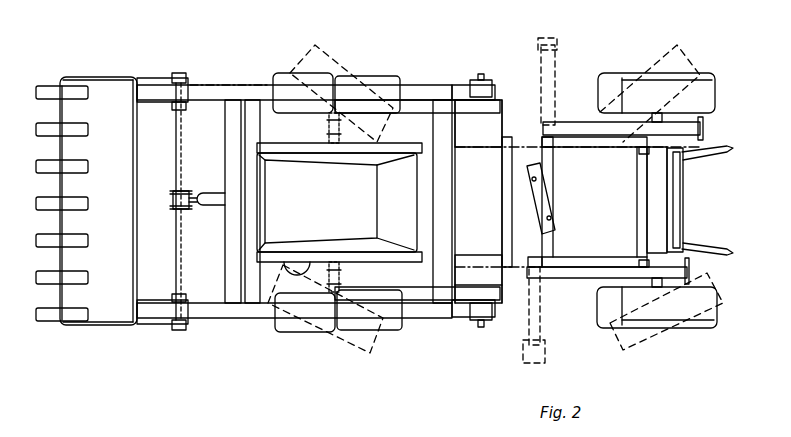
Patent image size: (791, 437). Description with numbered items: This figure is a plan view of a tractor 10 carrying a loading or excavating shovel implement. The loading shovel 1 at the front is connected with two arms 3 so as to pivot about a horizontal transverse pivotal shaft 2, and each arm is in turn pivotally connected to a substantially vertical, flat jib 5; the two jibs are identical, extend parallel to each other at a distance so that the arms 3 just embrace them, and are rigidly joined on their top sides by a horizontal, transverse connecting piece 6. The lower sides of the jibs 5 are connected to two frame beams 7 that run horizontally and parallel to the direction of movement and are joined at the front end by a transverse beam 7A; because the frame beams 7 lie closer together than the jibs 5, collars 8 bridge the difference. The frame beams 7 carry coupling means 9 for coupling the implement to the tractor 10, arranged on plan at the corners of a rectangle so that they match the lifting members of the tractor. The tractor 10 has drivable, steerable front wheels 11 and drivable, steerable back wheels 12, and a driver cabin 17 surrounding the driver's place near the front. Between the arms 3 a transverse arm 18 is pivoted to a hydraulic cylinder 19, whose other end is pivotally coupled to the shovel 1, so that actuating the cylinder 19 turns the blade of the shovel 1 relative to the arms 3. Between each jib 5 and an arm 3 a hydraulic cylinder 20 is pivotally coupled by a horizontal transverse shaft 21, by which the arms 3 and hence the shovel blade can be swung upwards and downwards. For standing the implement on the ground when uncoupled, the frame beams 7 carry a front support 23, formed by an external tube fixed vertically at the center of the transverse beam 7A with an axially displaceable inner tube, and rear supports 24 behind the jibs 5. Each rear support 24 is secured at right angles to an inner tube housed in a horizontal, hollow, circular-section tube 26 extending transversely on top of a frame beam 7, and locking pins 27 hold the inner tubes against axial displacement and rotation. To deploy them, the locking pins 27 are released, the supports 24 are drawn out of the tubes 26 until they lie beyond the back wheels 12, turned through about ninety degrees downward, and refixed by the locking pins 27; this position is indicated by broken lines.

The loading shovel 1 is at (106, 88).
The horizontal transverse pivotal shaft 2 is at (178, 73).
The arms 3 is at (246, 88).
The jib 5 is at (497, 117).
The connecting piece 6 is at (450, 186).
The frame beams 7 is at (627, 143).
The transverse beam 7A is at (254, 140).
The collars 8 is at (490, 134).
The coupling means 9 is at (347, 152).
The tractor 10 is at (687, 209).
The front wheels 11 is at (287, 75).
The back wheels 12 is at (610, 74).
The driver cabin 17 is at (287, 164).
The transverse arm 18 is at (230, 137).
The hydraulic cylinder 19 is at (207, 193).
The hydraulic cylinder 20 is at (460, 87).
The horizontal transverse shaft 21 is at (482, 77).
The support 23 is at (272, 192).
The support 24 is at (552, 128).
The hollow tubes 26 is at (540, 247).
The locking pins 27 is at (547, 137).